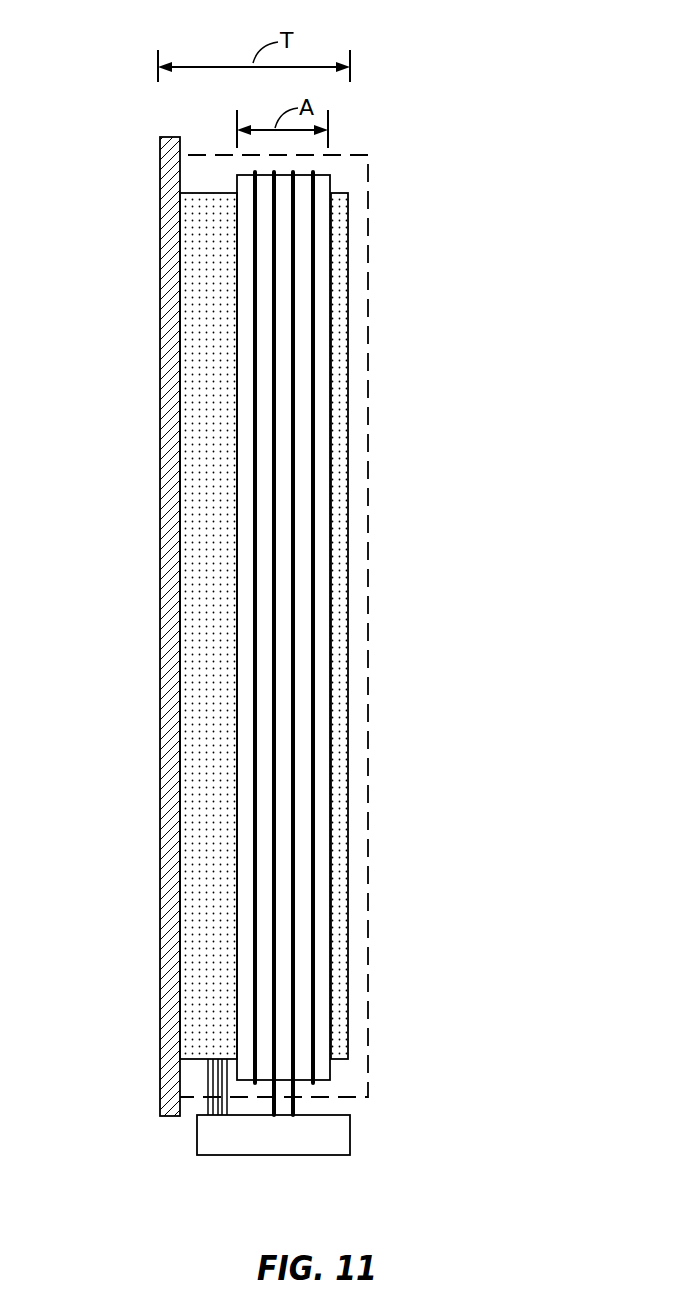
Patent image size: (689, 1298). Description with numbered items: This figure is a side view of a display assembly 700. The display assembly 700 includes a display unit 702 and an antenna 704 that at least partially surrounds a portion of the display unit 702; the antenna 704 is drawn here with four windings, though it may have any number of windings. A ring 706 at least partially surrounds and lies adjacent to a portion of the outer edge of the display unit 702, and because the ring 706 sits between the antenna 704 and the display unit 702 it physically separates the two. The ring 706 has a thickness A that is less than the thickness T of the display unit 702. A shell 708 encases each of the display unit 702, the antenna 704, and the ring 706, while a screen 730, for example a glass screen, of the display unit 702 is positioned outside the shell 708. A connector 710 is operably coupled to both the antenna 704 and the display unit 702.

The display assembly 700 is at (502, 68).
The display unit 702 is at (349, 255).
The antenna 704 is at (275, 605).
The ring 706 is at (262, 175).
The shell 708 is at (361, 155).
The connector 710 is at (273, 1155).
The screen 730 is at (150, 717).